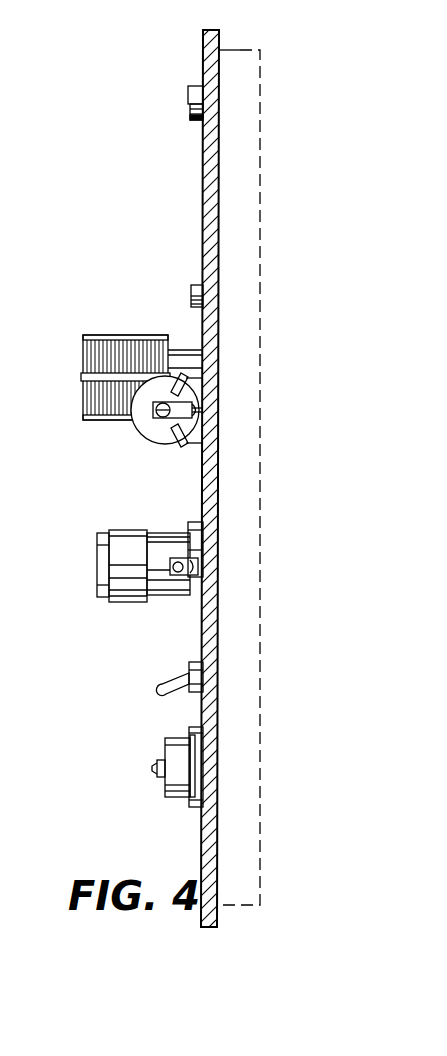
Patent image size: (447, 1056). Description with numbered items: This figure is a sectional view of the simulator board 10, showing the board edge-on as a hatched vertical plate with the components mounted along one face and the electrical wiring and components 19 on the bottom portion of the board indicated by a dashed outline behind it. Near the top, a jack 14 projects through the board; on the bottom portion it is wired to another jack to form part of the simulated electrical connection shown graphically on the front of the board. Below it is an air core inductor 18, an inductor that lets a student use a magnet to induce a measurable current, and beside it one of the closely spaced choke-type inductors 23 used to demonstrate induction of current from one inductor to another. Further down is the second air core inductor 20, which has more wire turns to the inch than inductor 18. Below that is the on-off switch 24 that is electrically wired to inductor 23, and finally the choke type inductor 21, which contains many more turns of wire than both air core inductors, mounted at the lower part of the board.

The simulator board 10 is at (199, 30).
The electrical wiring and components 19 is at (260, 50).
The jack 14 is at (188, 100).
The air core inductor 18 is at (122, 338).
The choke-type inductor 23 is at (142, 434).
The air core inductor 20 is at (122, 532).
The on-off switch 24 is at (172, 681).
The choke type inductor 21 is at (167, 750).